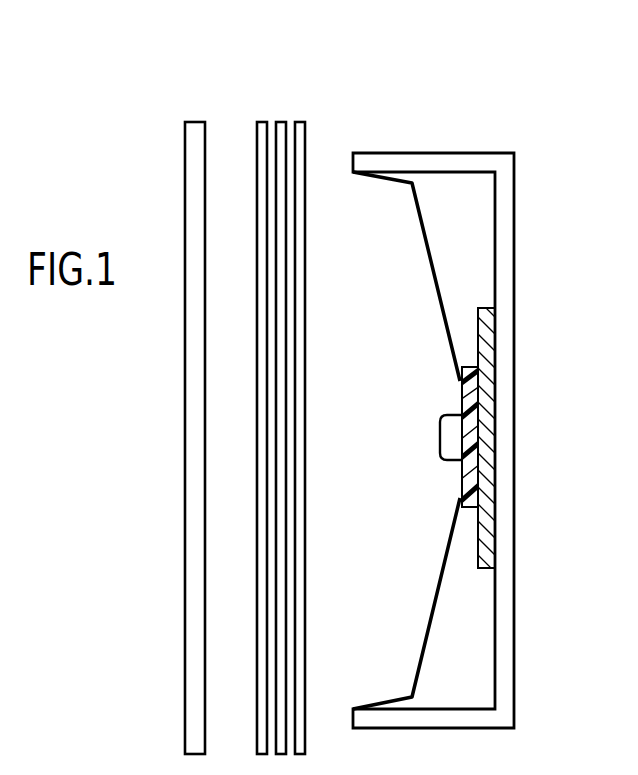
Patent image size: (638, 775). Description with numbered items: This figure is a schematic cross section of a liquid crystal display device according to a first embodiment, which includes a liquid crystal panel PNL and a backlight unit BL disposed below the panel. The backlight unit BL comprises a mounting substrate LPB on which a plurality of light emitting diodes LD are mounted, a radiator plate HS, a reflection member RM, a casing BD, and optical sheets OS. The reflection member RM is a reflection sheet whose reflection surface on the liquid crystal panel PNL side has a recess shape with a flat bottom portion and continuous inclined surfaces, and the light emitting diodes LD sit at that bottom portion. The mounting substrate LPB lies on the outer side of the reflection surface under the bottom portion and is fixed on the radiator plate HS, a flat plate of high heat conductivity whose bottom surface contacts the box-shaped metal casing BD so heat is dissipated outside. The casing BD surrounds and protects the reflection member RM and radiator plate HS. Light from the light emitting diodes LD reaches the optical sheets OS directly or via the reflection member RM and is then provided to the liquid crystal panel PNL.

The liquid crystal panel PNL is at (195, 122).
The backlight unit BL is at (515, 56).
The optical sheet OS is at (312, 111).
The reflection member RM is at (418, 208).
The casing BD is at (467, 163).
The mounting substrate LPB is at (467, 370).
The radiator plate HS is at (490, 307).
The light emitting diodes LD is at (440, 437).